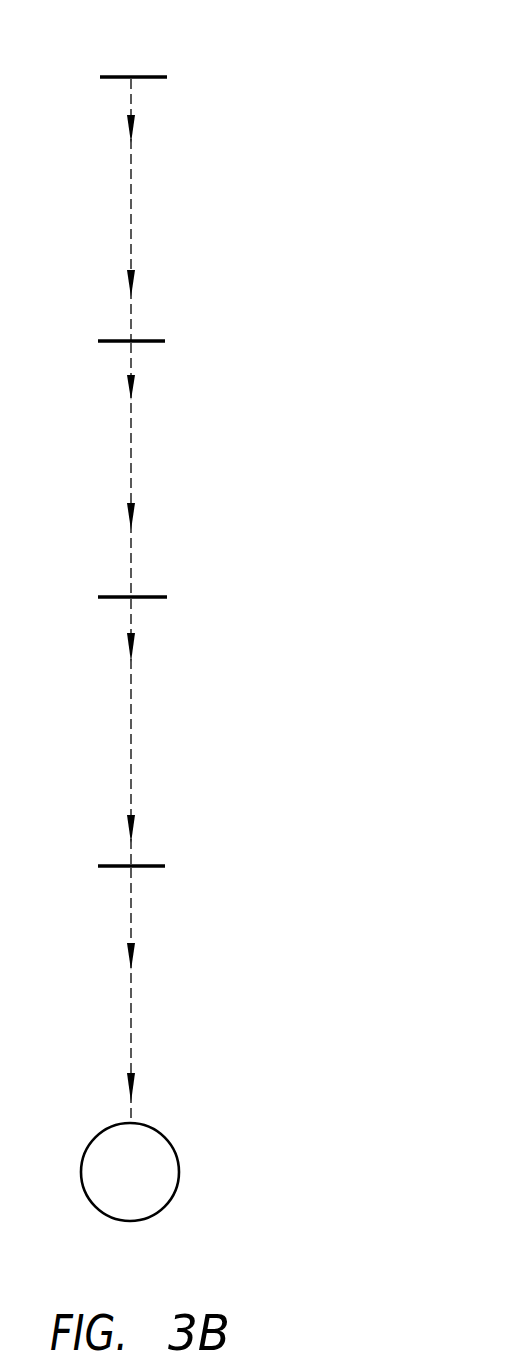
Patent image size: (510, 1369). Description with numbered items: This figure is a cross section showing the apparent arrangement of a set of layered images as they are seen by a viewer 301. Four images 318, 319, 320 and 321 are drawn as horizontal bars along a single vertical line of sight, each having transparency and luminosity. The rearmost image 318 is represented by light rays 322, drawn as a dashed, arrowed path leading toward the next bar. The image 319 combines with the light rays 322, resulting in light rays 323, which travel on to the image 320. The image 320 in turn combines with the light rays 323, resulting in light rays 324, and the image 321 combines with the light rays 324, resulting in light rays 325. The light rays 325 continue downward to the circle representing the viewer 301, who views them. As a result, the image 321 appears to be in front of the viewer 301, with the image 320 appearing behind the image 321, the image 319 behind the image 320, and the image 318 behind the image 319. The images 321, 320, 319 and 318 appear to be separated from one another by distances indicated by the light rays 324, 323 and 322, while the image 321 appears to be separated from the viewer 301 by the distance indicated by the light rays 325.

The viewer 301 is at (85, 1147).
The image 318 is at (155, 76).
The image 319 is at (148, 340).
The image 320 is at (145, 596).
The image 321 is at (148, 865).
The light rays 322 is at (131, 173).
The light rays 323 is at (131, 442).
The light rays 324 is at (131, 737).
The light rays 325 is at (131, 1015).